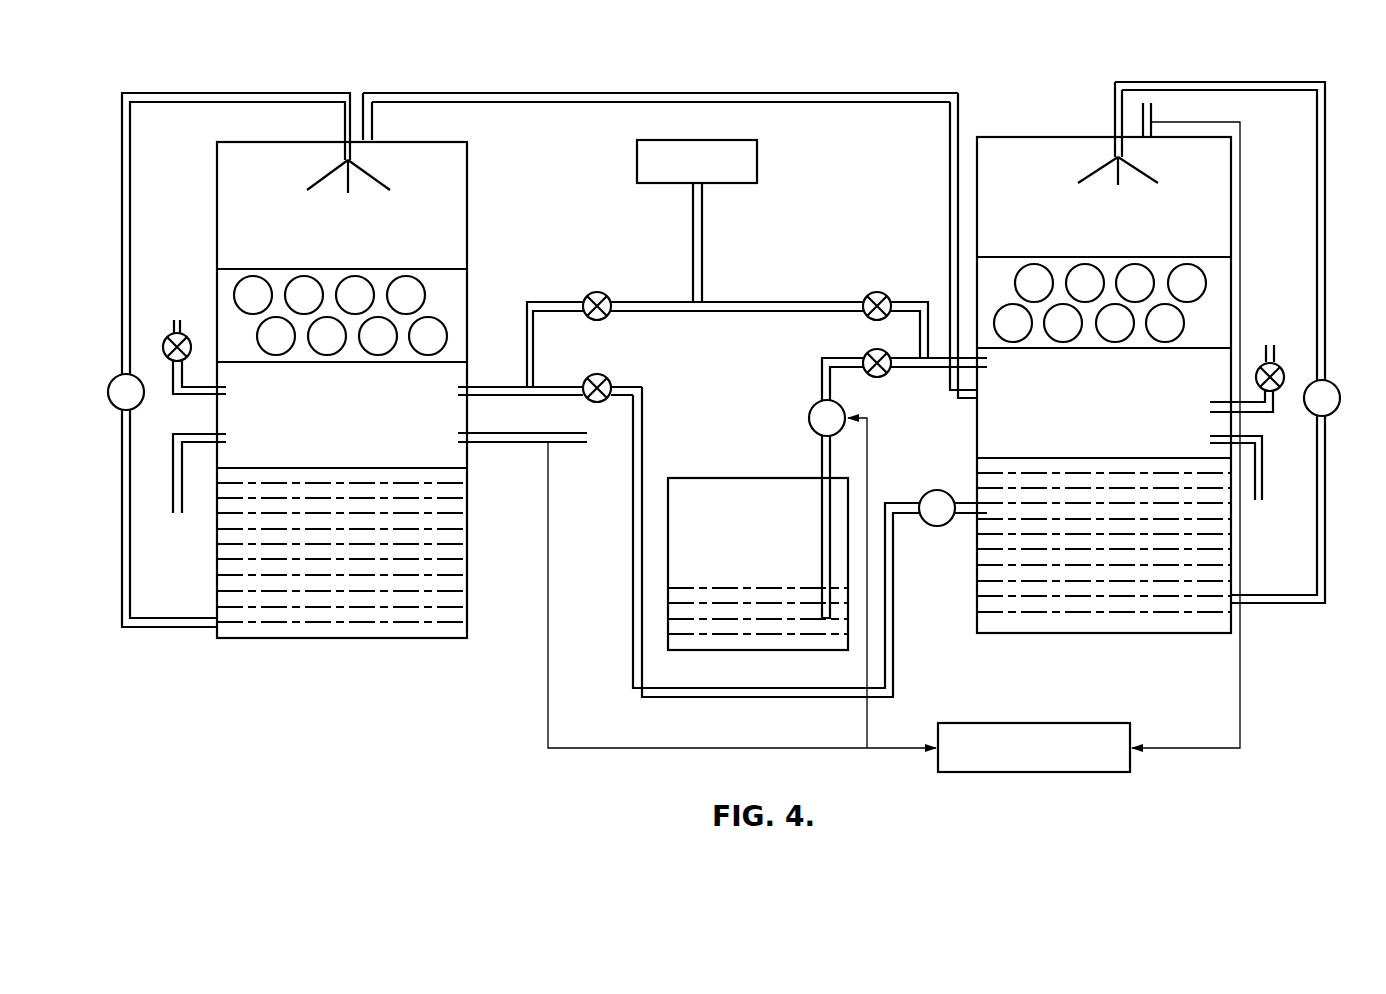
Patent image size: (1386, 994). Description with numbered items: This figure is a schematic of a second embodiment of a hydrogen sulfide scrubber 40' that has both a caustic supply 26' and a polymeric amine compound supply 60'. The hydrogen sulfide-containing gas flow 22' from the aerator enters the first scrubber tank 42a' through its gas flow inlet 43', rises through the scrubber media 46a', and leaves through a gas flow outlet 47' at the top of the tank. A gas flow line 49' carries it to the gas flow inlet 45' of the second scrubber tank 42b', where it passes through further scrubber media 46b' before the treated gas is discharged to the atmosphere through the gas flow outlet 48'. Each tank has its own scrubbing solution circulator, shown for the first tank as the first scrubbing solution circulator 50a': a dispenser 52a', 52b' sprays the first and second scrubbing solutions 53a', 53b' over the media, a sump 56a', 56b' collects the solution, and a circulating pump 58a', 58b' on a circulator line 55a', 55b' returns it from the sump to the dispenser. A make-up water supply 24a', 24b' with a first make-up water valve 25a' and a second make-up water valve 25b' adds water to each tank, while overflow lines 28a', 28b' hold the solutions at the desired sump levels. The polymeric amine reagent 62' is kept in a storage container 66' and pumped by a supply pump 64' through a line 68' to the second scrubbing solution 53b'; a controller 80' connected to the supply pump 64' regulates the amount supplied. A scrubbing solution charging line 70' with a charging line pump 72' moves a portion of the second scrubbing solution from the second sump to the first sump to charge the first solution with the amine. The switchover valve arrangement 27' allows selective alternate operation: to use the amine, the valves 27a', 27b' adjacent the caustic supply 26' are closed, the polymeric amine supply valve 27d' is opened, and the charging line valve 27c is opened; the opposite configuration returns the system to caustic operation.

The hydrogen sulfide-containing gas flow 22' is at (550, 408).
The make-up water supply 24a' is at (172, 316).
The make-up water supply 24b' is at (1282, 352).
The first make-up water valve 25a' is at (189, 396).
The second make-up water valve 25b' is at (1261, 418).
The caustic supply 26' is at (724, 160).
The switchover valve arrangement 27' is at (727, 282).
The valve adjacent the caustic supply 27a' is at (611, 291).
The valve adjacent the caustic supply 27b' is at (894, 287).
The charging line valve 27c is at (597, 373).
The polymeric amine supply valve 27d' is at (925, 350).
The overflow line 28a' is at (189, 495).
The overflow line 28b' is at (1256, 468).
The hydrogen sulfide scrubber 40' is at (725, 454).
The first scrubber tank 42a' is at (378, 390).
The second scrubber tank 42b' is at (1104, 362).
The gas flow inlet 43' is at (522, 466).
The gas flow inlet 45' is at (951, 272).
The scrubber media 46a' is at (375, 310).
The scrubber media 46b' is at (1143, 296).
The gas flow outlet 47' is at (405, 116).
The gas flow outlet 48' is at (1173, 118).
The gas flow line 49' is at (660, 82).
The first scrubbing solution circulator 50a' is at (278, 365).
The dispenser 52a' is at (326, 150).
The dispenser 52b' is at (1105, 127).
The first scrubbing solution 53a' is at (342, 579).
The second scrubbing solution 53b' is at (1104, 570).
The circulator line 55a' is at (212, 360).
The circulator line 55b' is at (1246, 342).
The sump 56a' is at (373, 516).
The sump 56b' is at (1076, 525).
The circulating pump 58a' is at (111, 371).
The circulating pump 58b' is at (1337, 369).
The polymeric amine compound supply 60' is at (758, 527).
The polymeric amine reagent 62' is at (758, 632).
The supply pump 64' is at (797, 414).
The storage container 66' is at (758, 547).
The line 68' is at (832, 465).
The scrubbing solution charging line 70' is at (753, 542).
The charging line pump 72' is at (931, 490).
The controller 80' is at (894, 466).